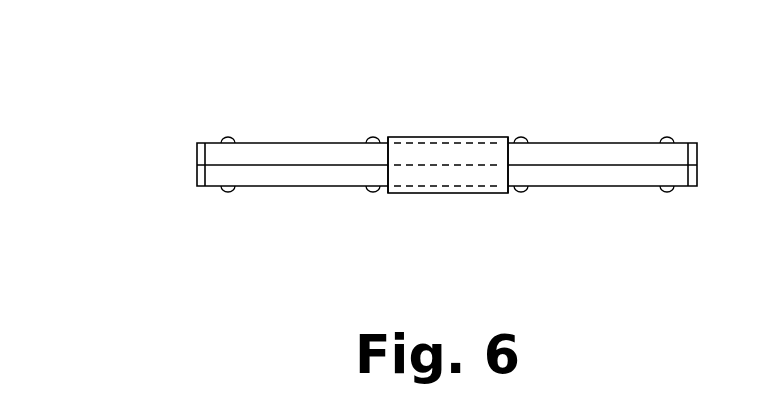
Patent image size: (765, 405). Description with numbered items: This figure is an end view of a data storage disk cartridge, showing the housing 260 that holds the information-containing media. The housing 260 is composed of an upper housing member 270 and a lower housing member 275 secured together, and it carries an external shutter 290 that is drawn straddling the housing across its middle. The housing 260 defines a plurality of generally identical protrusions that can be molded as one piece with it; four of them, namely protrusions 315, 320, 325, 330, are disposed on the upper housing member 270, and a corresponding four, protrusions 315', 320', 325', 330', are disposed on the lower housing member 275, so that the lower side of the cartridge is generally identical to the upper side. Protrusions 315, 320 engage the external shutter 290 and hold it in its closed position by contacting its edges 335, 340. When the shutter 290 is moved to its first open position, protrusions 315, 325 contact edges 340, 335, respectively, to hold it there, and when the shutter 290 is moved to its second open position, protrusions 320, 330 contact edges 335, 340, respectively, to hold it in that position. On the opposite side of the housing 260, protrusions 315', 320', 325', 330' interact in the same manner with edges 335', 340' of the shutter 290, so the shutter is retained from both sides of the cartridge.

The housing 260 is at (138, 168).
The upper housing member 270 is at (197, 152).
The lower housing member 275 is at (197, 176).
The external shutter 290 is at (435, 137).
The protrusion 315 is at (351, 111).
The protrusion 315' is at (360, 219).
The protrusion 320 is at (539, 107).
The protrusion 320' is at (543, 215).
The protrusion 325 is at (238, 110).
The protrusion 325' is at (235, 217).
The protrusion 330 is at (674, 108).
The protrusion 330' is at (675, 220).
The edge 335 is at (393, 93).
The edge 335' is at (421, 222).
The edge 340 is at (491, 93).
The edge 340' is at (495, 230).